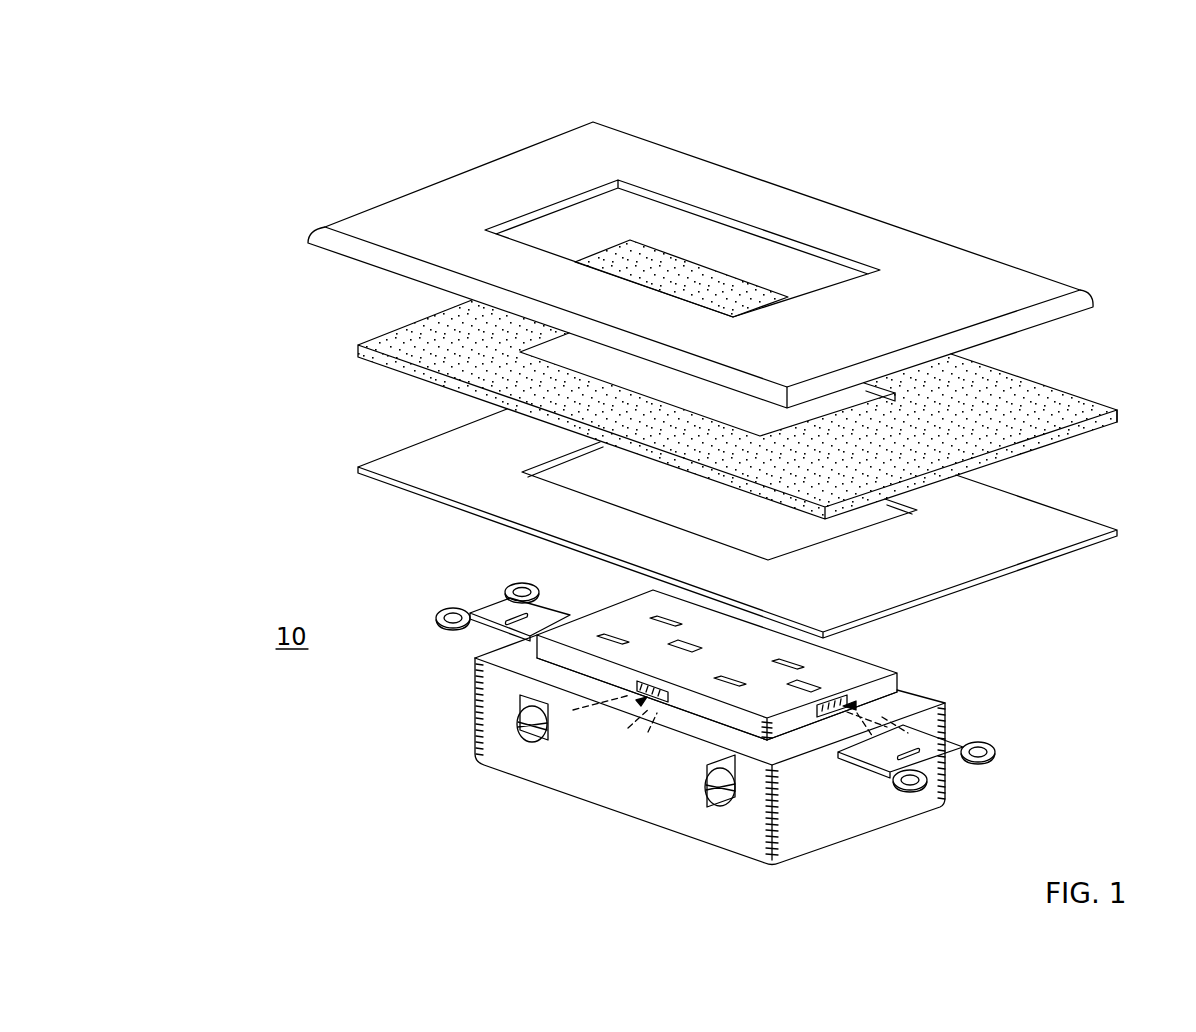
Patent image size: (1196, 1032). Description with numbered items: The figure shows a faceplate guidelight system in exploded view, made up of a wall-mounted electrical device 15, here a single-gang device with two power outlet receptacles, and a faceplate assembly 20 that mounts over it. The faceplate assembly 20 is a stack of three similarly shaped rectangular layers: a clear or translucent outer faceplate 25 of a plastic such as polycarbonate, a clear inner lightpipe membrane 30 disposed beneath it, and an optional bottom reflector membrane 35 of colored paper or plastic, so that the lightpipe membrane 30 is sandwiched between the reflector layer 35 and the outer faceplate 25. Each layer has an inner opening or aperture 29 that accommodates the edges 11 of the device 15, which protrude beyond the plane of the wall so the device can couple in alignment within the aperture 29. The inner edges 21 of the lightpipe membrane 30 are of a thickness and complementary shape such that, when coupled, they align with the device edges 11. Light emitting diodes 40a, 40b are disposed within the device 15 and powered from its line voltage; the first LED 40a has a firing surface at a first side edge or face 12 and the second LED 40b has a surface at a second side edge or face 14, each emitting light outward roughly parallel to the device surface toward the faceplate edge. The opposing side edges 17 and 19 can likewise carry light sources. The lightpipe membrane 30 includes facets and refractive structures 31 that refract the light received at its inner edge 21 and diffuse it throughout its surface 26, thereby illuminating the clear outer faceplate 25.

The edges 11 is at (700, 697).
The first side edge 12 is at (647, 705).
The second side edge 14 is at (797, 723).
The wall-mounted electrical device 15 is at (370, 737).
The opposing first side edge 17 is at (880, 660).
The opposing second side edge 19 is at (540, 640).
The faceplate assembly 20 is at (300, 128).
The inner edge 21 is at (897, 390).
The outer faceplate 25 is at (700, 256).
The surface 26 is at (840, 471).
The inner opening or aperture 29 is at (607, 200).
The inner lightpipe membrane 30 is at (752, 379).
The facets and refractive structures 31 is at (1010, 410).
The bottom reflector membrane 35 is at (1015, 553).
The light emitting diode 40a is at (690, 700).
The light emitting diode 40b is at (858, 706).